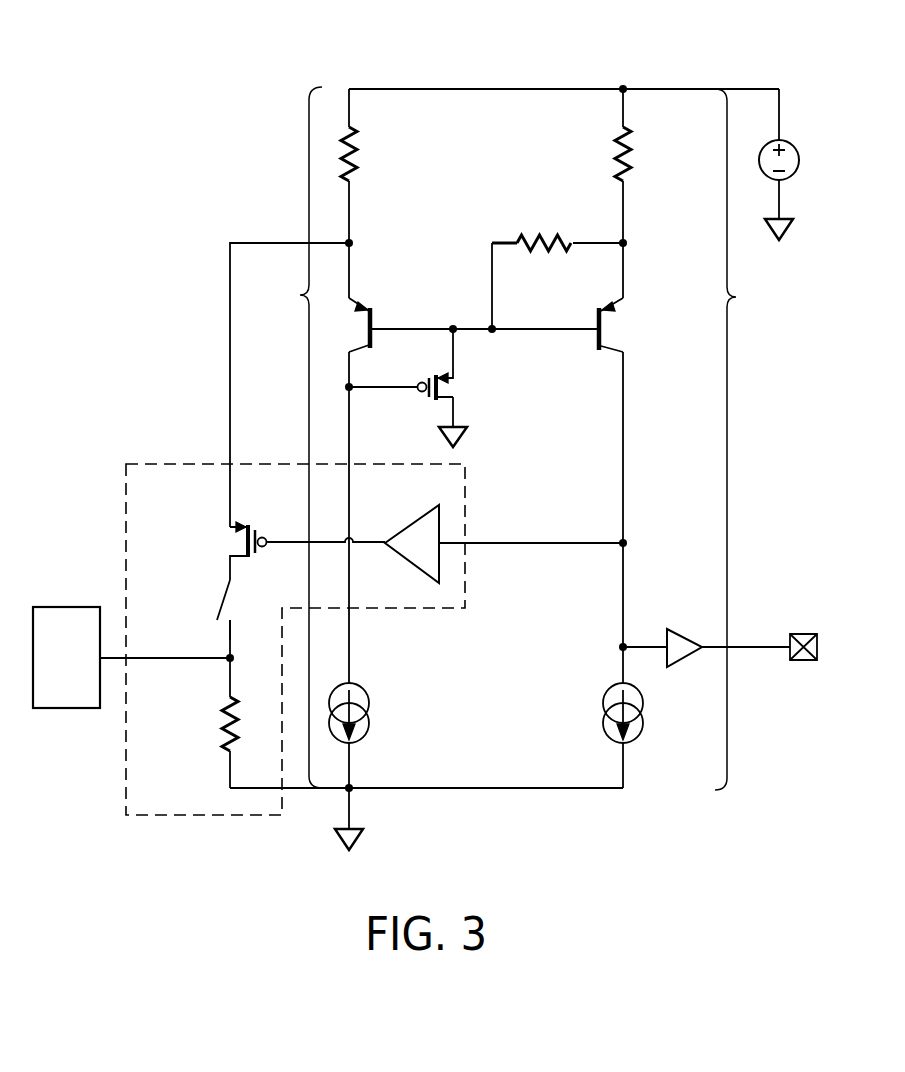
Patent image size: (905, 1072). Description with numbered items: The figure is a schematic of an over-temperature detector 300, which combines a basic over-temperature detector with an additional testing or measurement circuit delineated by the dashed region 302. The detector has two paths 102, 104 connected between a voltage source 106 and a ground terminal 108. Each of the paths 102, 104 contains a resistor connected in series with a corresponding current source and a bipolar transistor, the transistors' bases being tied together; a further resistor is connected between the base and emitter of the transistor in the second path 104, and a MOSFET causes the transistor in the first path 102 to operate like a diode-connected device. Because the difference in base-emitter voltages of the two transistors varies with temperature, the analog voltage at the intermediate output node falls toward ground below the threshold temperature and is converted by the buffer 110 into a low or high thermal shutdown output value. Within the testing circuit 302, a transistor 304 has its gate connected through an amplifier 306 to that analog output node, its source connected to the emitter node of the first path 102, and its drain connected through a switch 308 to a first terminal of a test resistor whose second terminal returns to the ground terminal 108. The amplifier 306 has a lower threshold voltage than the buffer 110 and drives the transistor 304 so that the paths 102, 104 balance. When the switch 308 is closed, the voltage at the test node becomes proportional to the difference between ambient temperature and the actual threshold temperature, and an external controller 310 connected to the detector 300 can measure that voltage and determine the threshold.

The detector 300 is at (136, 42).
The path 102 is at (292, 437).
The path 104 is at (744, 439).
The voltage source 106 is at (800, 158).
The ground terminal 108 is at (789, 232).
The buffer 110 is at (685, 632).
The testing circuit 302 is at (168, 466).
The transistor 304 is at (253, 525).
The amplifier 306 is at (413, 523).
The switch 308 is at (226, 600).
The controller 310 is at (66, 607).